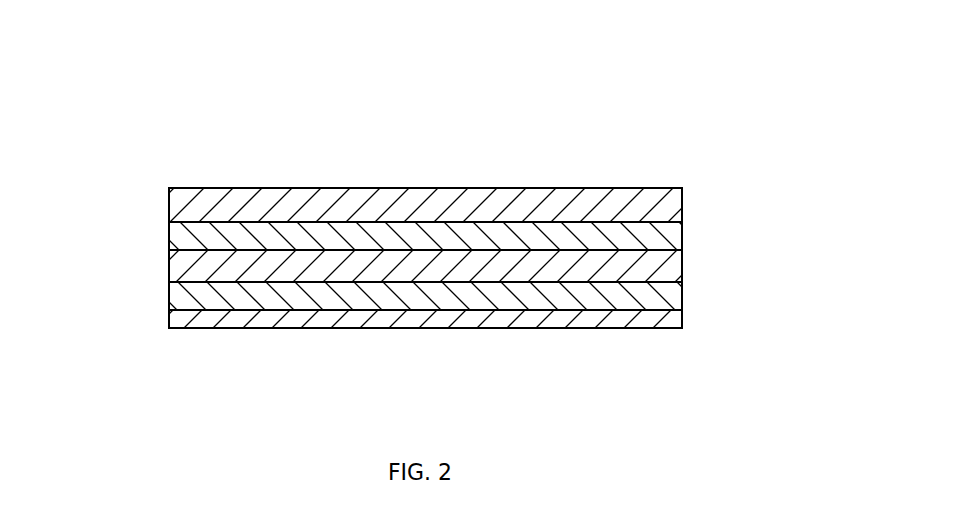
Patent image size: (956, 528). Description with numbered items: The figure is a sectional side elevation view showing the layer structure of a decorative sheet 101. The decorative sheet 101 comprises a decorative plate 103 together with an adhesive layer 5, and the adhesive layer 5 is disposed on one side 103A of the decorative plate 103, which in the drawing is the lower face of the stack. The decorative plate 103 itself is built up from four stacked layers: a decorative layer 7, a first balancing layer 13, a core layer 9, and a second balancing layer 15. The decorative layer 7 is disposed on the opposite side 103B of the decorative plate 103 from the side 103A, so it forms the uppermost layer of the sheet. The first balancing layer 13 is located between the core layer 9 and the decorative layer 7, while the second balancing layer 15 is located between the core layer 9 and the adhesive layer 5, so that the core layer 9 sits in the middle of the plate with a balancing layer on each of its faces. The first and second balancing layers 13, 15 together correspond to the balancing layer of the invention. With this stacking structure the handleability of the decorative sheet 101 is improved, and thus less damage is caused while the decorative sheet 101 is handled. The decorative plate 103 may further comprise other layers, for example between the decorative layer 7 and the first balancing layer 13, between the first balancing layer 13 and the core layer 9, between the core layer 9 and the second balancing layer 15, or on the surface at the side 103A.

The decorative sheet 101 is at (640, 113).
The decorative plate 103 is at (840, 188).
The one side of the decorative plate 103A is at (158, 319).
The opposite side of the decorative plate 103B is at (158, 194).
The decorative layer 7 is at (648, 202).
The first balancing layer 13 is at (648, 238).
The core layer 9 is at (648, 274).
The second balancing layer 15 is at (648, 301).
The adhesive layer 5 is at (648, 320).